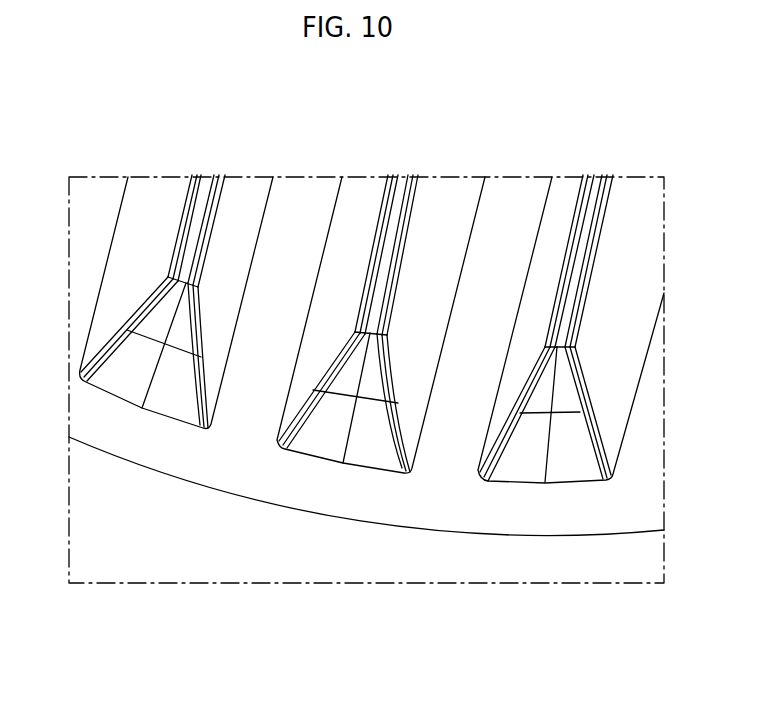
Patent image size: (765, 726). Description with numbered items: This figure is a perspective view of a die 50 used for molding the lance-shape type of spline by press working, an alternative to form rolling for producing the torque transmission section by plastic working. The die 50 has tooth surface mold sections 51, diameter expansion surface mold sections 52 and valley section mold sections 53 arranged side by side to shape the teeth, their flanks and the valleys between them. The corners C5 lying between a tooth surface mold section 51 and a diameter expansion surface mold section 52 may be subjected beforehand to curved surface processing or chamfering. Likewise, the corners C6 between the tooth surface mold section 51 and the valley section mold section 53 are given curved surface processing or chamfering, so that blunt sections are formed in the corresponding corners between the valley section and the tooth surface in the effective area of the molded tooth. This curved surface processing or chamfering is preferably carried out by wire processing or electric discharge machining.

The die 50 is at (232, 503).
The tooth surface mold section 51 is at (362, 208).
The diameter expansion surface mold section 52 is at (370, 442).
The valley section mold section 53 is at (400, 203).
The corners C5 is at (301, 418).
The corners C6 is at (364, 272).